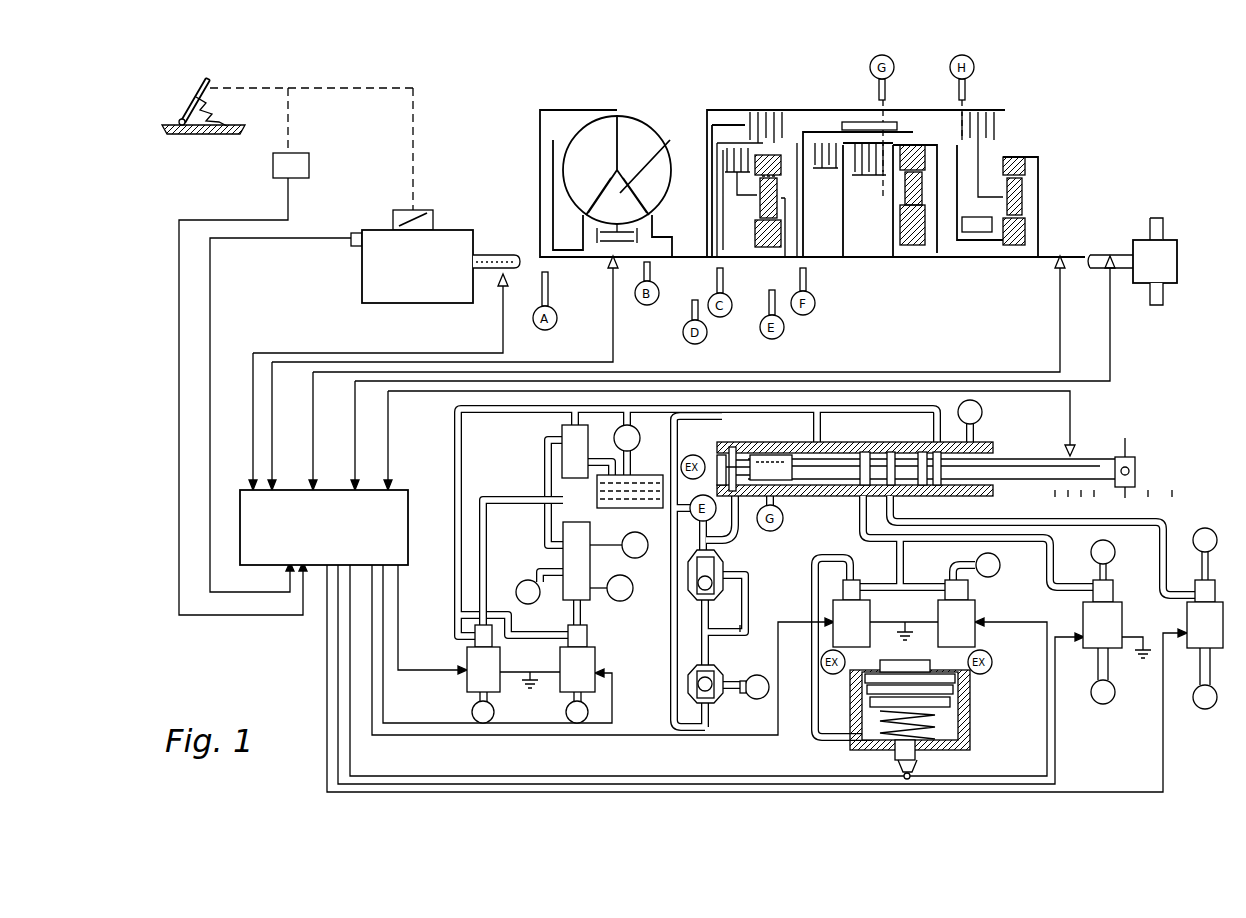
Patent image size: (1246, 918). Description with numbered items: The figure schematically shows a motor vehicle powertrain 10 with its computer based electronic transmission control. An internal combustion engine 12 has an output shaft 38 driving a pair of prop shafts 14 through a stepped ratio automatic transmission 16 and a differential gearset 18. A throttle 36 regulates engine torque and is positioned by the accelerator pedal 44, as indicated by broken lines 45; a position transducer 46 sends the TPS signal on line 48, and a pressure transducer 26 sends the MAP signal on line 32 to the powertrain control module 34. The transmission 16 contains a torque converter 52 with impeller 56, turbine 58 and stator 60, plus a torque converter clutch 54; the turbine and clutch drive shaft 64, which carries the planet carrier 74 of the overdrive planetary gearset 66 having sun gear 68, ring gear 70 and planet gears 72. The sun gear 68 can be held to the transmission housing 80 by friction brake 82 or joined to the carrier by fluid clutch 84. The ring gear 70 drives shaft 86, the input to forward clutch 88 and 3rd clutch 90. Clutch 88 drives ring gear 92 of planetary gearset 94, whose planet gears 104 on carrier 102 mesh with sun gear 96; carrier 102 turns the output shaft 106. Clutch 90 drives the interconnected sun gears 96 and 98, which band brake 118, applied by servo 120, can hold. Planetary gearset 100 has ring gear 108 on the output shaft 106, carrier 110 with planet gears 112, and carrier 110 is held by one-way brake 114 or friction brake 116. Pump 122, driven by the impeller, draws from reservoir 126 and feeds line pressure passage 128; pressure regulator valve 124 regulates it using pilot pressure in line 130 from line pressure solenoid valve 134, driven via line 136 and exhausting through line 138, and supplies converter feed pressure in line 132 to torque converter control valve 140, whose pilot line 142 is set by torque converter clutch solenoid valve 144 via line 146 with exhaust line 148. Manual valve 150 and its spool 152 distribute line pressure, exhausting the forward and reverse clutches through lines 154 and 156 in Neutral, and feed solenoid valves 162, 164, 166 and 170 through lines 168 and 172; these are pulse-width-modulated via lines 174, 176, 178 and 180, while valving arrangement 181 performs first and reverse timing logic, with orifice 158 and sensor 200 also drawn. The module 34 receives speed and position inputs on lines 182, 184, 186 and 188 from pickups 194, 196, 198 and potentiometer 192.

The motor vehicle powertrain 10 is at (503, 105).
The internal combustion engine 12 is at (473, 232).
The vehicle prop shafts 14 is at (1158, 225).
The stepped ratio automatic transmission 16 is at (700, 125).
The differential gearset 18 is at (1177, 257).
The pressure transducer 26 is at (357, 246).
The MAP signal line 32 is at (212, 378).
The powertrain control module 34 is at (408, 527).
The throttle 36 is at (433, 216).
The engine output shaft 38 is at (497, 256).
The accelerator pedal 44 is at (182, 100).
The broken lines 45 is at (336, 88).
The position transducer 46 is at (309, 163).
The TPS signal line 48 is at (226, 220).
The torque converter 52 is at (612, 100).
The torque converter clutch 54 is at (530, 135).
The impeller 56 is at (635, 126).
The turbine 58 is at (596, 125).
The stator 60 is at (650, 158).
The shaft 64 is at (590, 258).
The overdrive planetary gearset 66 is at (763, 300).
The sun gear 68 is at (770, 240).
The ring gear 70 is at (772, 155).
The planet gears 72 is at (760, 205).
The planet carrier 74 is at (788, 200).
The transmission housing 80 is at (722, 110).
The friction brake 82 is at (762, 112).
The fluid clutch 84 is at (718, 150).
The shaft 86 is at (828, 262).
The forward clutch 88 is at (872, 178).
The 3rd clutch 90 is at (822, 170).
The ring gear 92 is at (908, 145).
The planetary gearset 94 is at (913, 272).
The sun gear 96 is at (917, 235).
The sun gear 98 is at (1028, 236).
The planetary gearset 100 is at (1019, 272).
The carrier 102 is at (898, 245).
The planet gears 104 is at (935, 170).
The transmission output shaft 106 is at (1112, 255).
The ring gear 108 is at (1028, 162).
The carrier 110 is at (985, 190).
The planet gears 112 is at (1028, 195).
The one-way brake 114 is at (985, 250).
The friction brake 116 is at (992, 125).
The friction band brake 118 is at (856, 122).
The fluid-operated servo 120 is at (862, 745).
The variable displacement pump 122 is at (640, 445).
The pressure regulator valve 124 is at (560, 431).
The reservoir 126 is at (645, 506).
The line pressure passage 128 is at (456, 410).
The pilot pressure line 130 is at (494, 498).
The converter feed pressure line 132 is at (546, 470).
The line pressure solenoid valve 134 is at (467, 660).
The control line 136 is at (400, 618).
The exhaust line 138 is at (472, 710).
The torque converter control valve 140 is at (560, 556).
The pilot pressure line 142 is at (585, 620).
The torque converter clutch solenoid valve 144 is at (595, 658).
The control line 146 is at (612, 712).
The exhaust line 148 is at (565, 712).
The manual valve 150 is at (800, 500).
The spool 152 is at (850, 448).
The exhaust line 154 is at (722, 456).
The exhaust line 156 is at (983, 418).
The orifice 158 is at (745, 700).
The 2nd band solenoid valve 162 is at (872, 605).
The 3rd clutch solenoid valve 164 is at (976, 640).
The D3 clutch solenoid valve 166 is at (1120, 625).
The supply line 168 is at (858, 530).
The 4th clutch solenoid valve 170 is at (1185, 618).
The supply line 172 is at (1090, 528).
The control line 174 is at (550, 735).
The control line 176 is at (650, 784).
The control line 178 is at (1050, 775).
The control line 180 is at (1158, 748).
The valving arrangement 181 is at (748, 618).
The engine speed input line 182 is at (447, 353).
The turbine speed input line 184 is at (557, 362).
The output speed input line 186 is at (930, 372).
The manual valve position signal line 188 is at (818, 381).
The potentiometer 192 is at (1073, 450).
The variable reluctance magnetic pickup 194 is at (505, 300).
The variable reluctance magnetic pickup 196 is at (612, 286).
The variable reluctance magnetic pickup 198 is at (1068, 295).
The output torque sensor 200 is at (1114, 290).